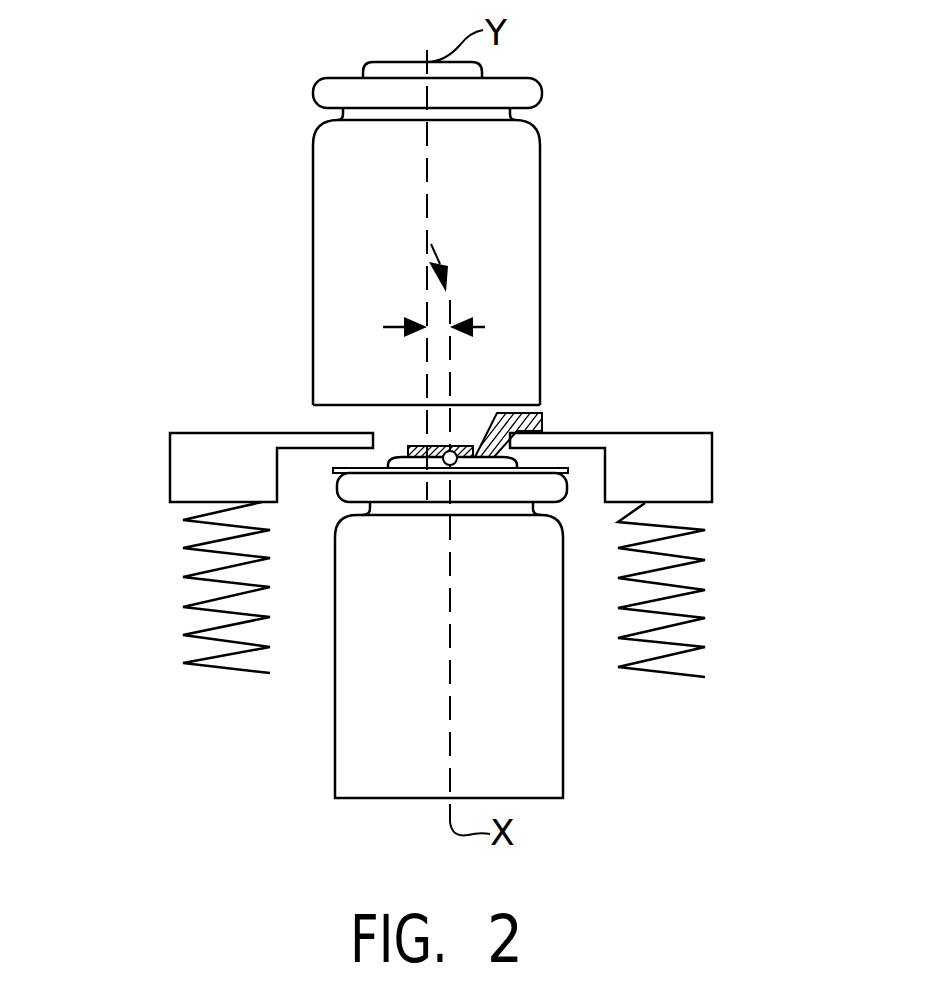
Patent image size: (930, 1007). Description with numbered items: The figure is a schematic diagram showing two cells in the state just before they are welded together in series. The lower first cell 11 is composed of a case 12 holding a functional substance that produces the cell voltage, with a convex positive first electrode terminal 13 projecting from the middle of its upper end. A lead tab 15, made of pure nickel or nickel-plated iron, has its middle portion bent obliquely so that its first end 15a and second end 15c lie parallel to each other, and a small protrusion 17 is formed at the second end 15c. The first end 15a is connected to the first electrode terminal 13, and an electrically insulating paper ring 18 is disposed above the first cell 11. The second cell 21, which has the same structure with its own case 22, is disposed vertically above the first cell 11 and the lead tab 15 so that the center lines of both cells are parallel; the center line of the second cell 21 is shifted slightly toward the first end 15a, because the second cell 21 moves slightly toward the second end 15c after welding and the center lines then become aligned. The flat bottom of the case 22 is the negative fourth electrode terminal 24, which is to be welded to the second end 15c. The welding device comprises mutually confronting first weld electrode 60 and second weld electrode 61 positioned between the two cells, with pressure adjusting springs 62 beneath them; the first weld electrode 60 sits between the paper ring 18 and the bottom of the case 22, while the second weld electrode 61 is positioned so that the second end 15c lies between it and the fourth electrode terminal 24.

The first cell 11 is at (540, 743).
The case 12 is at (337, 758).
The first electrode terminal 13 is at (443, 462).
The lead tab 15 is at (487, 430).
The first end 15a is at (408, 447).
The second end 15c is at (543, 418).
The small protrusion 17 is at (525, 403).
The paper ring 18 is at (340, 468).
The second cell 21 is at (522, 160).
The case 22 is at (313, 220).
The fourth electrode terminal 24 is at (407, 405).
The first weld electrode 60 is at (178, 466).
The second weld electrode 61 is at (675, 470).
The pressure adjusting springs 62 is at (197, 576).